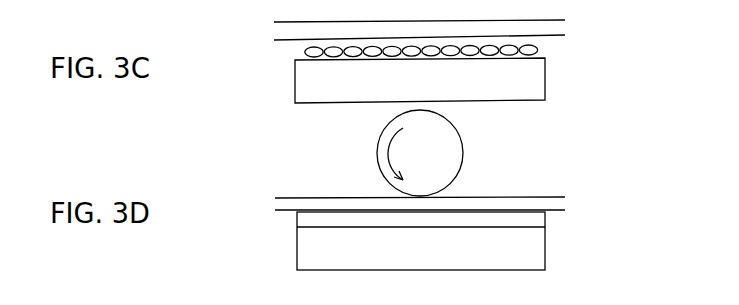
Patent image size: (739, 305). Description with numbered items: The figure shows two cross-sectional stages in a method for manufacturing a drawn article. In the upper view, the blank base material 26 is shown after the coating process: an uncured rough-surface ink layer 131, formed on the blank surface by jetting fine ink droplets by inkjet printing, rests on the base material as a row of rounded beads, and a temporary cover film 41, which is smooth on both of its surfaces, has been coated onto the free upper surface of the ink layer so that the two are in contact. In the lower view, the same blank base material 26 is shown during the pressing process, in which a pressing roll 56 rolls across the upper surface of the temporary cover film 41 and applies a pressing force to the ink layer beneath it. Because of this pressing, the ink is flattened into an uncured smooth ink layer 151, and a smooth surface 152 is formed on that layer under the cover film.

In FIG. 3C, the temporary cover film 41 is at (537, 21).
In FIG. 3D, the temporary cover film 41 is at (493, 200).
In FIG. 3C, the uncured rough-surface ink layer 131 is at (543, 47).
In FIG. 3C, the blank base material 26 is at (537, 81).
In FIG. 3D, the blank base material 26 is at (527, 250).
In FIG. 3D, the pressing roll 56 is at (448, 145).
In FIG. 3D, the smooth surface 152 is at (522, 211).
In FIG. 3D, the uncured smooth ink layer 151 is at (533, 215).